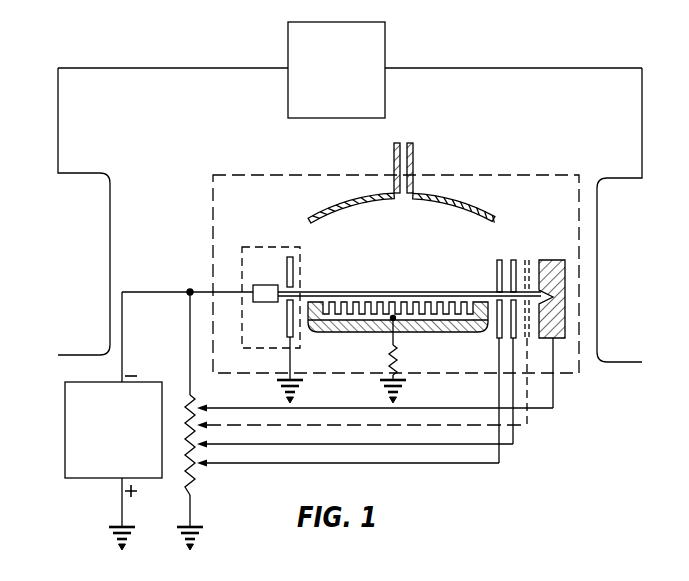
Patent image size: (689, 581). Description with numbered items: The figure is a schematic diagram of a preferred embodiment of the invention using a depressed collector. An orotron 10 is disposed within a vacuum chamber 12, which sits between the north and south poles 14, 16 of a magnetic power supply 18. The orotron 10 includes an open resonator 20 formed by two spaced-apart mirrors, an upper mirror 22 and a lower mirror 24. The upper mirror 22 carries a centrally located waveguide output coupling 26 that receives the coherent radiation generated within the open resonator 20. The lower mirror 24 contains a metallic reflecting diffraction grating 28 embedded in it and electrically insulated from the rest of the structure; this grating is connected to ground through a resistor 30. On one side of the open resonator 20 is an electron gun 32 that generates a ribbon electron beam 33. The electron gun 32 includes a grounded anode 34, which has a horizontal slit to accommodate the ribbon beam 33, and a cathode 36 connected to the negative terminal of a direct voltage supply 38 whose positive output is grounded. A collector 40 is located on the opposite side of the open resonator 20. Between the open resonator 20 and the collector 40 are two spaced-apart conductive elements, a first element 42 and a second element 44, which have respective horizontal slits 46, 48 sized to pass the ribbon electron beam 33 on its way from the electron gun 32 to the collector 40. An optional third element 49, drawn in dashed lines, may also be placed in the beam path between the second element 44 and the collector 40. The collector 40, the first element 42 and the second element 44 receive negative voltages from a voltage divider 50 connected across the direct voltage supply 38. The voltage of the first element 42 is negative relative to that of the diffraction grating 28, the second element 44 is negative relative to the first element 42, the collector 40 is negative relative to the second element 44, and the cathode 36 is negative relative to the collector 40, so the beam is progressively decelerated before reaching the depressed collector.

The orotron 10 is at (290, 218).
The vacuum chamber 12 is at (525, 177).
The north pole 14 is at (108, 172).
The south pole 16 is at (607, 177).
The magnetic power supply 18 is at (385, 42).
The open resonator 20 is at (410, 228).
The upper mirror 22 is at (333, 206).
The lower mirror 24 is at (330, 333).
The waveguide output coupling 26 is at (415, 162).
The diffraction grating 28 is at (424, 334).
The resistor 30 is at (390, 354).
The electron gun 32 is at (242, 330).
The ribbon electron beam 33 is at (355, 290).
The anode 34 is at (294, 272).
The cathode 36 is at (277, 285).
The direct voltage supply 38 is at (65, 423).
The collector 40 is at (551, 260).
The first element 42 is at (497, 280).
The second element 44 is at (520, 258).
The horizontal slit 46 is at (497, 290).
The horizontal slit 48 is at (510, 266).
The third element 49 is at (530, 258).
The voltage divider 50 is at (186, 462).